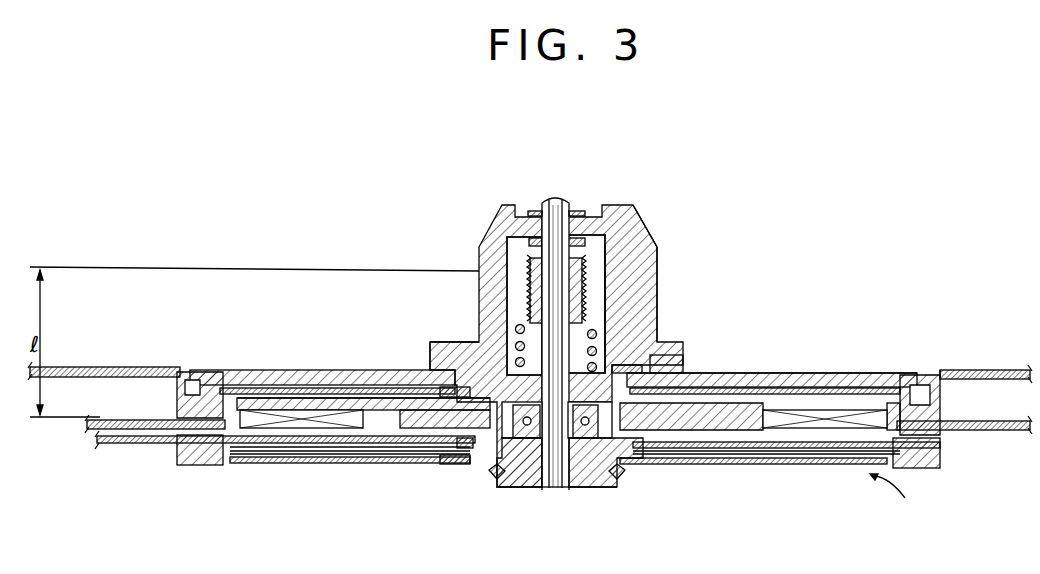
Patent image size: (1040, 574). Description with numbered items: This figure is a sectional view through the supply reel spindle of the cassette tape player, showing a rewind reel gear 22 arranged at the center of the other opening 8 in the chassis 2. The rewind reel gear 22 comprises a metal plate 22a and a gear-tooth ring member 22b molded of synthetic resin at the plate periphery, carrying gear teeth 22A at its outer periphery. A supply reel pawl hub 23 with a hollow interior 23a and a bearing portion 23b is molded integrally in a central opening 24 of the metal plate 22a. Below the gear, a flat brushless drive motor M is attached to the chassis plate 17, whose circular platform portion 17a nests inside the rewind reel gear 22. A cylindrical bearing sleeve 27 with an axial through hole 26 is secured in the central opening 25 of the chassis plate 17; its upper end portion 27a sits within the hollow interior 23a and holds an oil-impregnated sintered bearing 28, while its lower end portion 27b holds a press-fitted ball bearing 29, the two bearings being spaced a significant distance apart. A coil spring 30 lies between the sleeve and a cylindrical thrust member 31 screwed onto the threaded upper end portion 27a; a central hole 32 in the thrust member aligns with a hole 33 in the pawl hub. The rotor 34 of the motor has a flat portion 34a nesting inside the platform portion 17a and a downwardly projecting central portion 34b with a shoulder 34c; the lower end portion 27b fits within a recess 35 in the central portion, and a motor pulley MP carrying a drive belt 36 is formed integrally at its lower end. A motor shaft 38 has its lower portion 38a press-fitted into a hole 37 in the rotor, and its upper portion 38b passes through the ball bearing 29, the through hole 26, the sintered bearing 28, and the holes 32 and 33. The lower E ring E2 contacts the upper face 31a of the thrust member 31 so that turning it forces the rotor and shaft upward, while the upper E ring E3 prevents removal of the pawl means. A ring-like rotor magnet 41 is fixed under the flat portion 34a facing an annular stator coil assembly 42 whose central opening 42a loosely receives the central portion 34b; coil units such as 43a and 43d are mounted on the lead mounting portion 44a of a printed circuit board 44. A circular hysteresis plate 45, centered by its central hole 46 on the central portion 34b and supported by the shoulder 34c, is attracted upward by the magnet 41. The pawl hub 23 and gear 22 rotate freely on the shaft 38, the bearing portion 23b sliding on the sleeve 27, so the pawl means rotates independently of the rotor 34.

The chassis 2 is at (975, 372).
The other opening 8 is at (938, 374).
The chassis plate 17 is at (1005, 431).
The circular platform portion 17a is at (318, 388).
The rewind reel gear 22 is at (810, 372).
The metal plate 22a is at (760, 372).
The gear teeth 22A is at (183, 406).
The gear-tooth ring member 22b is at (928, 412).
The supply reel pawl hub 23 is at (654, 290).
The hollow interior 23a is at (654, 330).
The bearing portion 23b is at (443, 358).
The central opening 24 is at (680, 370).
The central opening 25 is at (440, 392).
The through hole 26 is at (525, 299).
The bearing sleeve 27 is at (534, 305).
The upper end portion 27a is at (584, 291).
The lower end portion 27b is at (516, 431).
The sintered bearing 28 is at (640, 250).
The ball bearing 29 is at (578, 468).
The coil spring 30 is at (586, 300).
The thrust member 31 is at (610, 238).
The upper face 31a is at (595, 251).
The central hole 32 is at (527, 244).
The hole 33 is at (552, 200).
The rotor 34 is at (285, 404).
The flat portion 34a is at (258, 406).
The central portion 34b is at (664, 444).
The shoulder 34c is at (460, 466).
The recess 35 is at (438, 462).
The drive belt 36 is at (620, 480).
The hole 37 is at (560, 487).
The motor shaft 38 is at (635, 355).
The lower portion 38a is at (545, 483).
The upper portion 38b is at (515, 328).
The rotor magnet 41 is at (270, 447).
The stator coil assembly 42 is at (290, 430).
The central opening 42a is at (643, 457).
The coil unit 43a is at (335, 452).
The coil unit 43d is at (820, 453).
The printed circuit board 44 is at (116, 443).
The lead mounting portion 44a is at (240, 458).
The hysteresis plate 45 is at (375, 463).
The central hole 46 is at (490, 470).
The lower E ring E2 is at (571, 218).
The upper E ring E3 is at (533, 210).
The drive motor M is at (896, 499).
The motor pulley MP is at (606, 486).